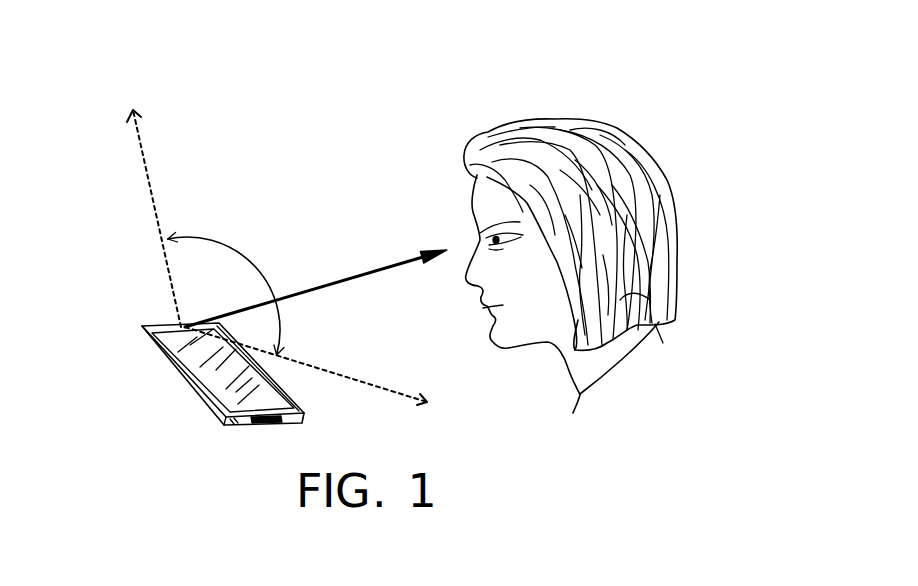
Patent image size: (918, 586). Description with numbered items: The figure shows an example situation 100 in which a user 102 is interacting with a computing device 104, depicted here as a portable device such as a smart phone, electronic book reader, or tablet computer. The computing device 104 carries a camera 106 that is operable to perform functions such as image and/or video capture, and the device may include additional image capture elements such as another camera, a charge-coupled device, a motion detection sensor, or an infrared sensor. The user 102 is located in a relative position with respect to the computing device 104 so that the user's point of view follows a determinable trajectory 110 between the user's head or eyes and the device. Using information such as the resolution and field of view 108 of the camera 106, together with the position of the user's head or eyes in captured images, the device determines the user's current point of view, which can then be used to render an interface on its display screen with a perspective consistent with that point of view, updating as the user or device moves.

The example situation 100 is at (730, 88).
The user 102 is at (428, 177).
The computing device 104 is at (140, 334).
The camera 106 is at (178, 330).
The field of view 108 is at (226, 289).
The trajectory 110 is at (316, 288).